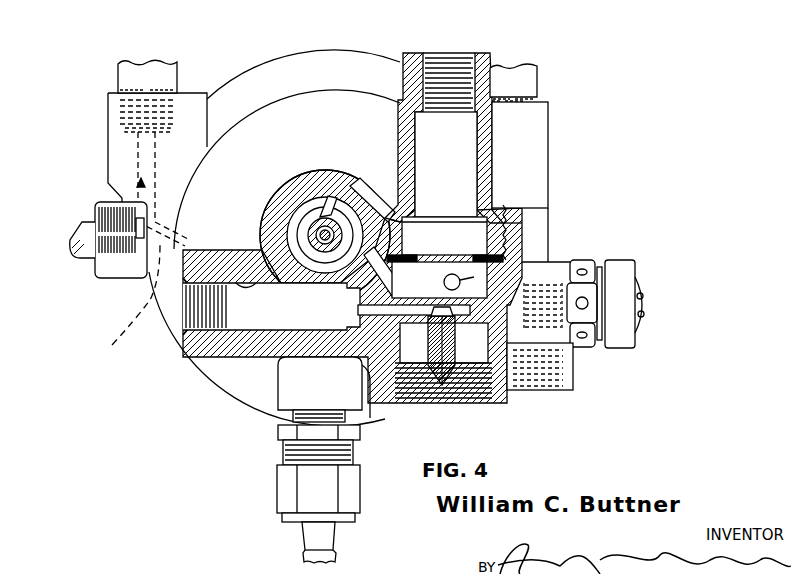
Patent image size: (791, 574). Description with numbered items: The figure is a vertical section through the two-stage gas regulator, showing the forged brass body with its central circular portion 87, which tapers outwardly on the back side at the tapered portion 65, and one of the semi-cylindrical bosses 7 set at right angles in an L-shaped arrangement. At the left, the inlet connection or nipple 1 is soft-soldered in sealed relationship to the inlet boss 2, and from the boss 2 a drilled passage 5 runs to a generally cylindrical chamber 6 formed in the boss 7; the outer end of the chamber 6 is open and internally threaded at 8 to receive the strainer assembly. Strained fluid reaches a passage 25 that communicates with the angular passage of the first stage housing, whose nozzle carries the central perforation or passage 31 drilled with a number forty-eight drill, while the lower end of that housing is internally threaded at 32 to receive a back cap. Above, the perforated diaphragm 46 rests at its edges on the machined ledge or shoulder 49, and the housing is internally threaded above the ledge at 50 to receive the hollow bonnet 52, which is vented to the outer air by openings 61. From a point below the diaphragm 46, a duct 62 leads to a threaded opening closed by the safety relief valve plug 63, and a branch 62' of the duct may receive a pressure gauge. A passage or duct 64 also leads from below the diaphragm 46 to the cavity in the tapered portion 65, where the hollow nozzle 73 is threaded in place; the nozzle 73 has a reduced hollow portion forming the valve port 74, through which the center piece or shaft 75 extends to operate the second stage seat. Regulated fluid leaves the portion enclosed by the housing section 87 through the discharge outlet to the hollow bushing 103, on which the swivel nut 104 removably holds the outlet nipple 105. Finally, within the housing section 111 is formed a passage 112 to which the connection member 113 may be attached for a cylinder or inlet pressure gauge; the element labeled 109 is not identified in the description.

The inlet connection or nipple 1 is at (82, 258).
The inlet boss 2 is at (128, 270).
The drilled passage 5 is at (127, 299).
The chamber 6 is at (233, 358).
The semi-cylindrical boss 7 is at (260, 360).
The internal threads 8 is at (180, 327).
The passage 25 is at (382, 406).
The central perforation or passage 31 is at (440, 403).
The internal threads 32 is at (457, 403).
The diaphragm 46 is at (505, 292).
The ledge or shoulder 49 is at (425, 262).
The internal threads 50 is at (527, 219).
The bonnet 52 is at (483, 140).
The openings 61 is at (490, 212).
The duct 62 is at (585, 285).
The branch of the duct 62' is at (578, 366).
The safety relief valve plug 63 is at (620, 302).
The passage or duct 64 is at (417, 205).
The tapered portion 65 is at (280, 187).
The hollow nozzle 73 is at (300, 230).
The valve port 74 is at (332, 188).
The center piece or shaft 75 is at (342, 198).
The central circular portion 87 is at (303, 105).
The hollow bushing 103 is at (278, 433).
The swivel nut 104 is at (277, 487).
The nipple 105 is at (302, 528).
The plug 109 is at (532, 80).
The housing section 111 is at (117, 107).
The passage 112 is at (143, 162).
The connection member 113 is at (201, 30).